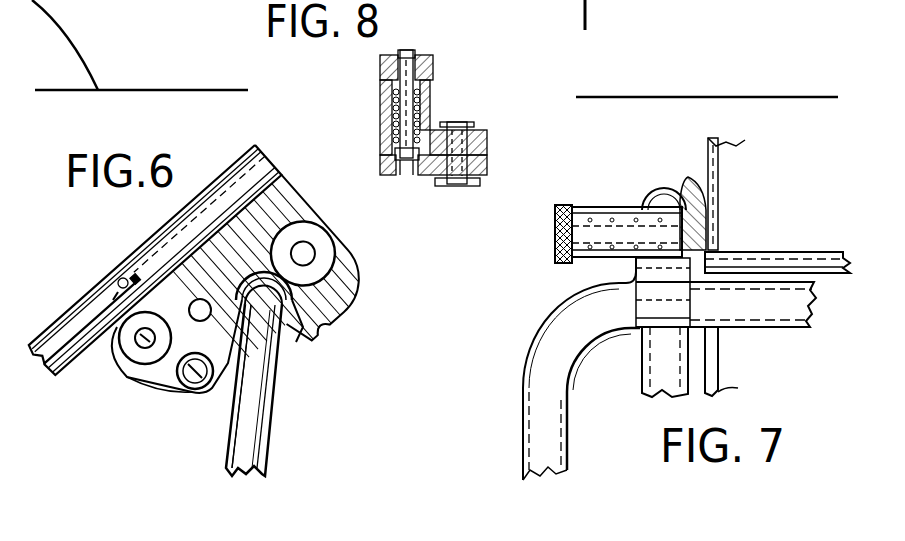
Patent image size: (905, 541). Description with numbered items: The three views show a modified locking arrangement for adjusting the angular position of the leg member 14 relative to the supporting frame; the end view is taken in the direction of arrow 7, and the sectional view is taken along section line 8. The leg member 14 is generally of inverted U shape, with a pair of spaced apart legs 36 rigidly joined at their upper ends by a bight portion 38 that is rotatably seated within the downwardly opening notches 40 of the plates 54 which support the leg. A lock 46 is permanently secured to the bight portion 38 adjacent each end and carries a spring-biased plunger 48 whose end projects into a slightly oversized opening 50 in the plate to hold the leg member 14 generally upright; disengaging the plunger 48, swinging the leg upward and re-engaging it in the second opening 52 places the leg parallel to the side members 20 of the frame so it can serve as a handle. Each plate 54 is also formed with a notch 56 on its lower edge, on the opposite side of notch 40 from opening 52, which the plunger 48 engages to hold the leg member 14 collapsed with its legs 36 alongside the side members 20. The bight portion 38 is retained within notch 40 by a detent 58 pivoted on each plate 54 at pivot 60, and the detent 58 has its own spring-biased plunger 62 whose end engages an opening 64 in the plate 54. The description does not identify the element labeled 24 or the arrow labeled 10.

In FIG. 6, the arrow 7 is at (364, 388).
In FIG. 6, the section line 8 is at (244, 355).
In FIG. 7, the apparatus 10 is at (764, 186).
In FIG. 6, the leg member 14 is at (268, 445).
In FIG. 7, the leg member 14 is at (519, 463).
In FIG. 6, the side members 20 is at (53, 323).
In FIG. 6, the slide rail 24 is at (278, 168).
In FIG. 7, the slide rail 24 is at (792, 252).
In FIG. 6, the legs 36 is at (226, 448).
In FIG. 7, the legs 36 is at (570, 438).
In FIG. 7, the bight portion 38 is at (812, 329).
In FIG. 7, the notches 40 is at (693, 360).
In FIG. 6, the lock 46 is at (292, 334).
In FIG. 7, the lock 46 is at (607, 205).
In FIG. 6, the spring-biased plunger 48 is at (338, 274).
In FIG. 7, the spring-biased plunger 48 is at (555, 262).
In FIG. 7, the opening 50 is at (716, 246).
In FIG. 6, the second opening 52 is at (140, 284).
In FIG. 8, the plates 54 is at (486, 178).
In FIG. 6, the plates 54 is at (288, 196).
In FIG. 7, the plates 54 is at (682, 184).
In FIG. 6, the notch 56 is at (323, 324).
In FIG. 8, the detent 58 is at (481, 152).
In FIG. 6, the detent 58 is at (152, 382).
In FIG. 6, the pivot 60 is at (196, 390).
In FIG. 8, the spring-biased plunger 62 is at (421, 60).
In FIG. 6, the spring-biased plunger 62 is at (120, 350).
In FIG. 8, the opening 64 is at (406, 168).